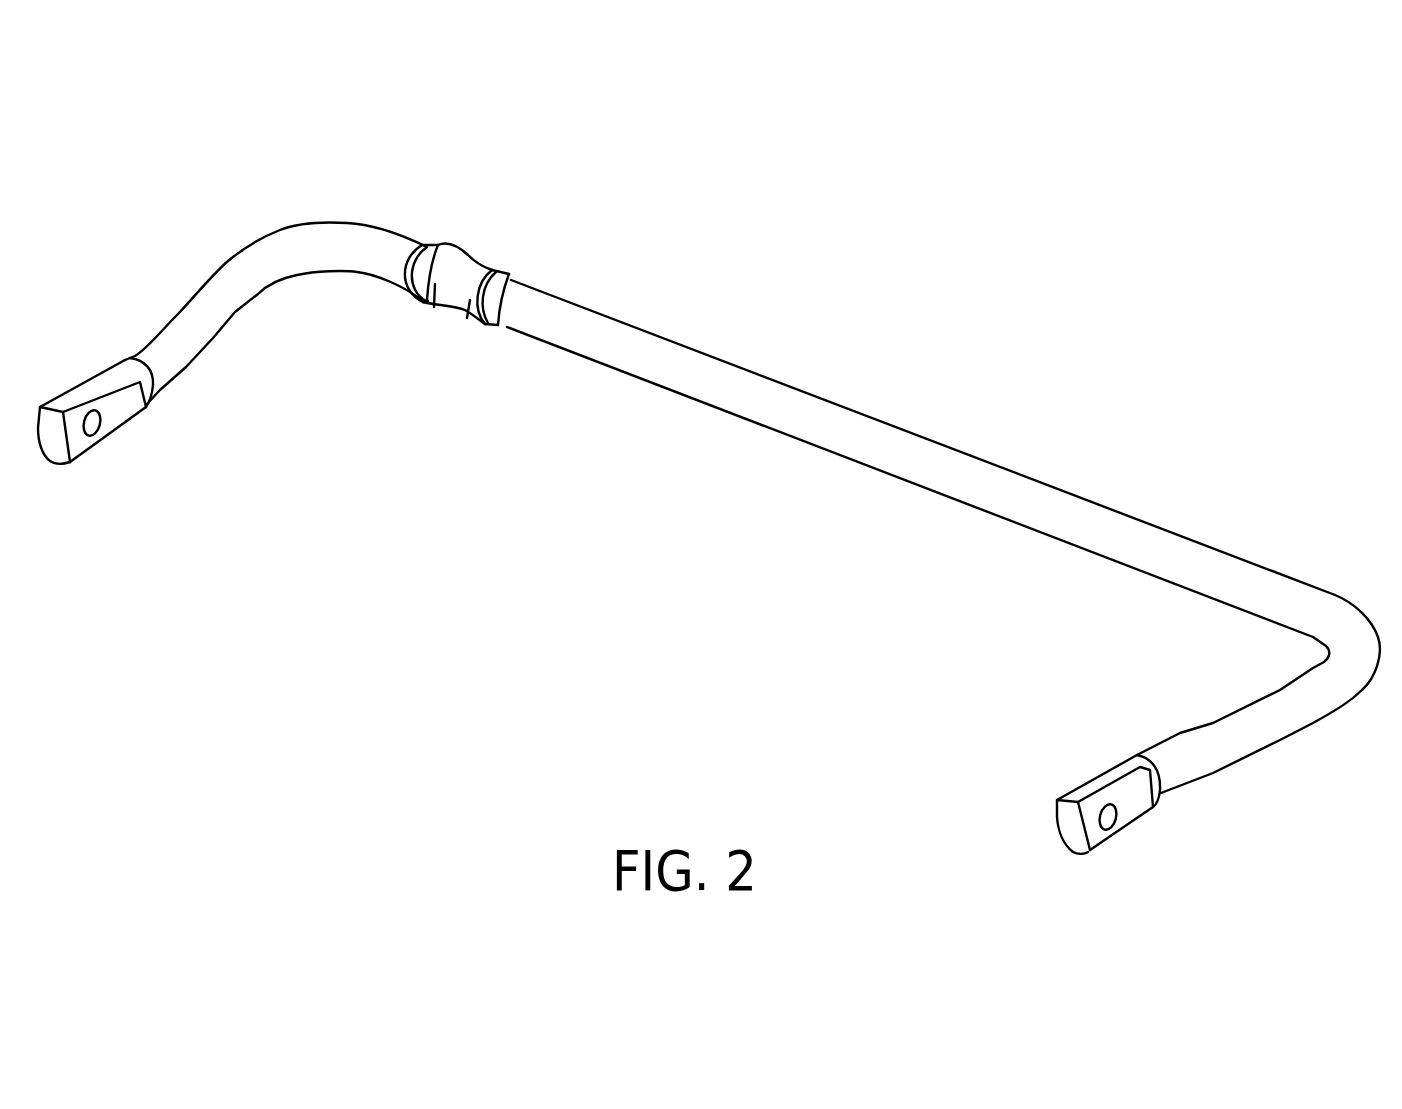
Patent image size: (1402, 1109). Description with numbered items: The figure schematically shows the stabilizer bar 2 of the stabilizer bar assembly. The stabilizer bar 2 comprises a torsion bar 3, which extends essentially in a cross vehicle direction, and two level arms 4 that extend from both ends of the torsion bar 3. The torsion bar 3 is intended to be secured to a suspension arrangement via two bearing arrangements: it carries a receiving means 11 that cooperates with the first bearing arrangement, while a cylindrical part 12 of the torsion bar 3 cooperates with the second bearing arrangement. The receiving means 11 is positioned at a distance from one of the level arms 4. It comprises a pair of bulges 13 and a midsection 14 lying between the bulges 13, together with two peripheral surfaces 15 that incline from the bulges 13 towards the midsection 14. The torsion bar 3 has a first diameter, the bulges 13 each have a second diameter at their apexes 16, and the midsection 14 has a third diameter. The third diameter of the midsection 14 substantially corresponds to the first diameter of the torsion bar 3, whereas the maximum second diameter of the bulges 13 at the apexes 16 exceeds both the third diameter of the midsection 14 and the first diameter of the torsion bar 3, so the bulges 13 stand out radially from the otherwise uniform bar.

The stabilizer bar 2 is at (709, 512).
The torsion bar 3 is at (932, 439).
The level arms 4 is at (182, 358).
The receiving means 11 is at (483, 289).
The cylindrical part 12 is at (1200, 540).
The bulges 13 is at (423, 302).
The midsection 14 is at (455, 309).
The peripheral surfaces 15 is at (434, 307).
The apexes 16 is at (417, 245).